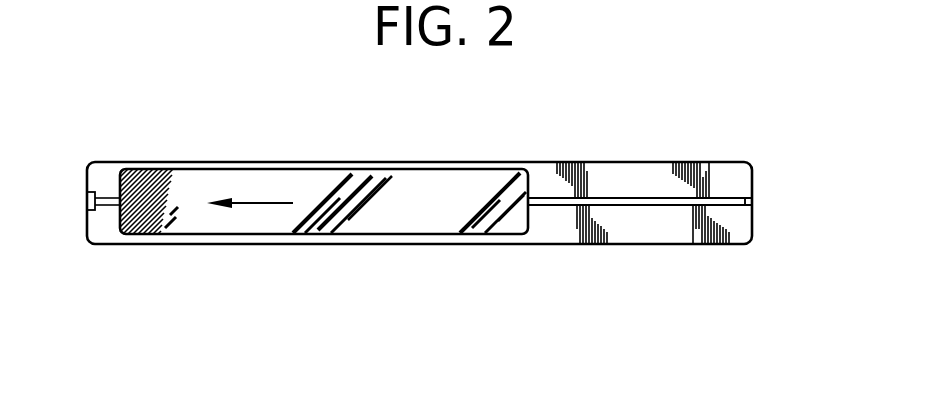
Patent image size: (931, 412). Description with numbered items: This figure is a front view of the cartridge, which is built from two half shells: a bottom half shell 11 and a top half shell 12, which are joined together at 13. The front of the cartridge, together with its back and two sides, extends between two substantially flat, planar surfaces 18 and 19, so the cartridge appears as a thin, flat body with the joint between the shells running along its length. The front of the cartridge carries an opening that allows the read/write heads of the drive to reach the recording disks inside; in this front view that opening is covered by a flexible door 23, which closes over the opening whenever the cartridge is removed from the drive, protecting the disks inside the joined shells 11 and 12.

The bottom half shell 11 is at (725, 168).
The top half shell 12 is at (677, 230).
The joint of the half shells 13 is at (87, 201).
The planar surface 18 is at (532, 245).
The planar surface 19 is at (532, 162).
The flexible door 23 is at (445, 178).